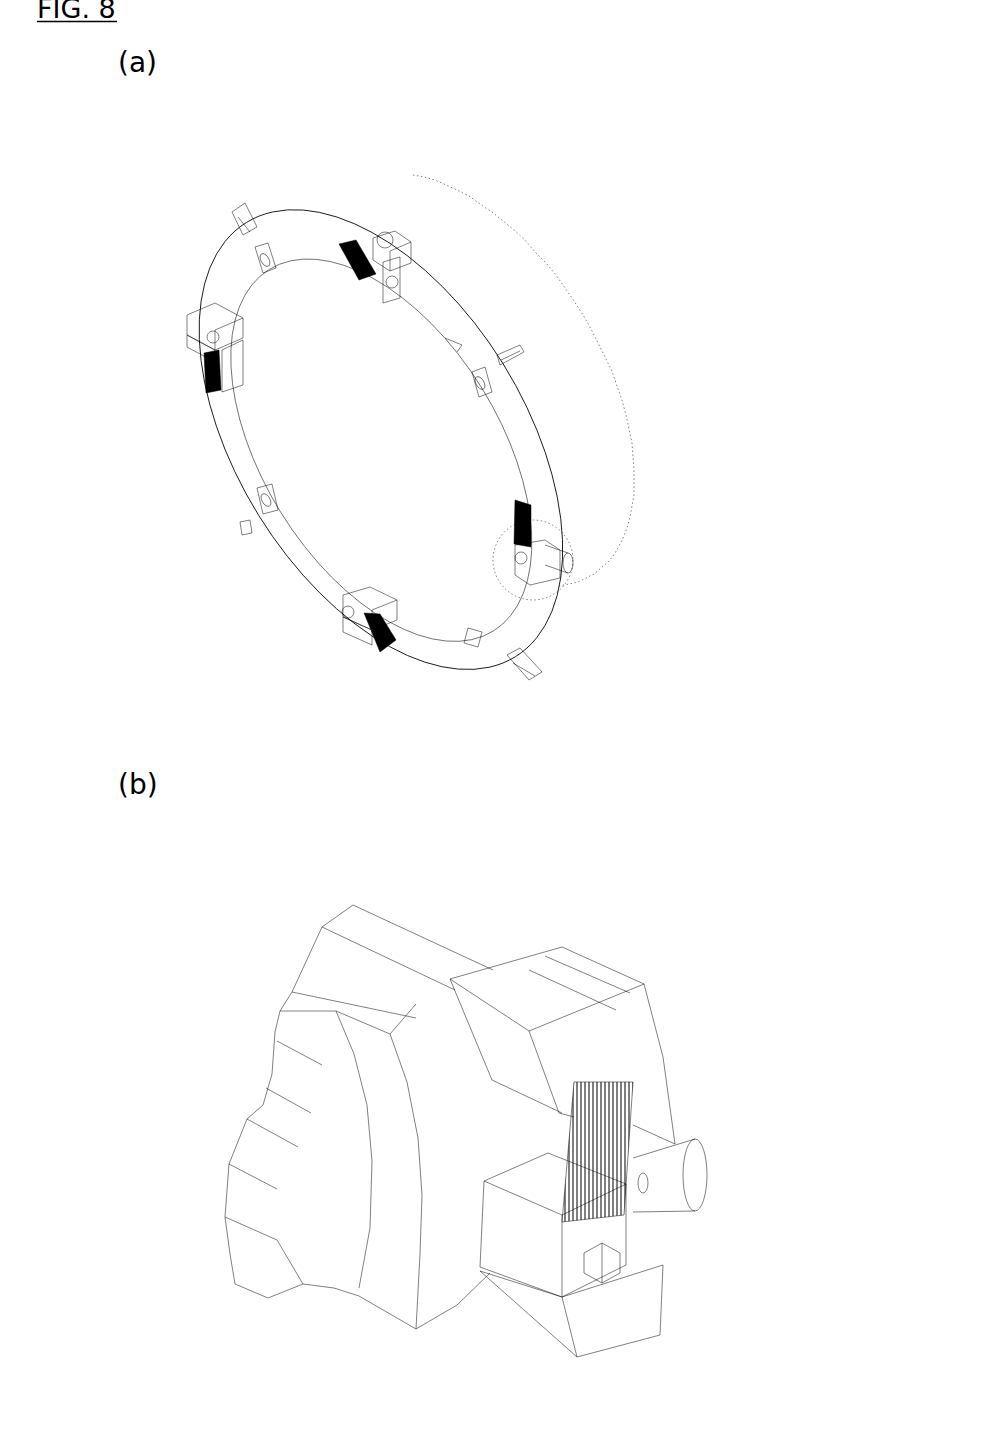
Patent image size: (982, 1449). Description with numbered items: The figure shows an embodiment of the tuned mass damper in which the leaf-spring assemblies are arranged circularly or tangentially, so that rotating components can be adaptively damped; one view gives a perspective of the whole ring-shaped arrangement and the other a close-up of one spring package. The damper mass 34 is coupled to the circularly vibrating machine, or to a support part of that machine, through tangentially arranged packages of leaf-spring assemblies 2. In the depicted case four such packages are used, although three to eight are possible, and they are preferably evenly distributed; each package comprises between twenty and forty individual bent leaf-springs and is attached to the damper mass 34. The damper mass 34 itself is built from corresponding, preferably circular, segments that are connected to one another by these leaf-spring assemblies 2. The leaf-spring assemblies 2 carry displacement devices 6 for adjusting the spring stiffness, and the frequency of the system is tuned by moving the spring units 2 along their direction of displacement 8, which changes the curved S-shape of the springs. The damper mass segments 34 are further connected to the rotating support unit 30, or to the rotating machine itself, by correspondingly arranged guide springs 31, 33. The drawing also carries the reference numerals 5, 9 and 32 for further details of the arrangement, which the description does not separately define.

The leaf-spring assemblies 2 is at (515, 525).
The holder 5 is at (385, 236).
The displacement devices 6 is at (570, 570).
The direction of displacement 8 is at (517, 537).
The inner peripheral surface 9 is at (440, 327).
The rotating support unit 30 is at (440, 205).
The guide springs 31 is at (505, 360).
The projection 32 is at (500, 352).
The guide springs 33 is at (268, 505).
The damper mass 34 is at (350, 220).